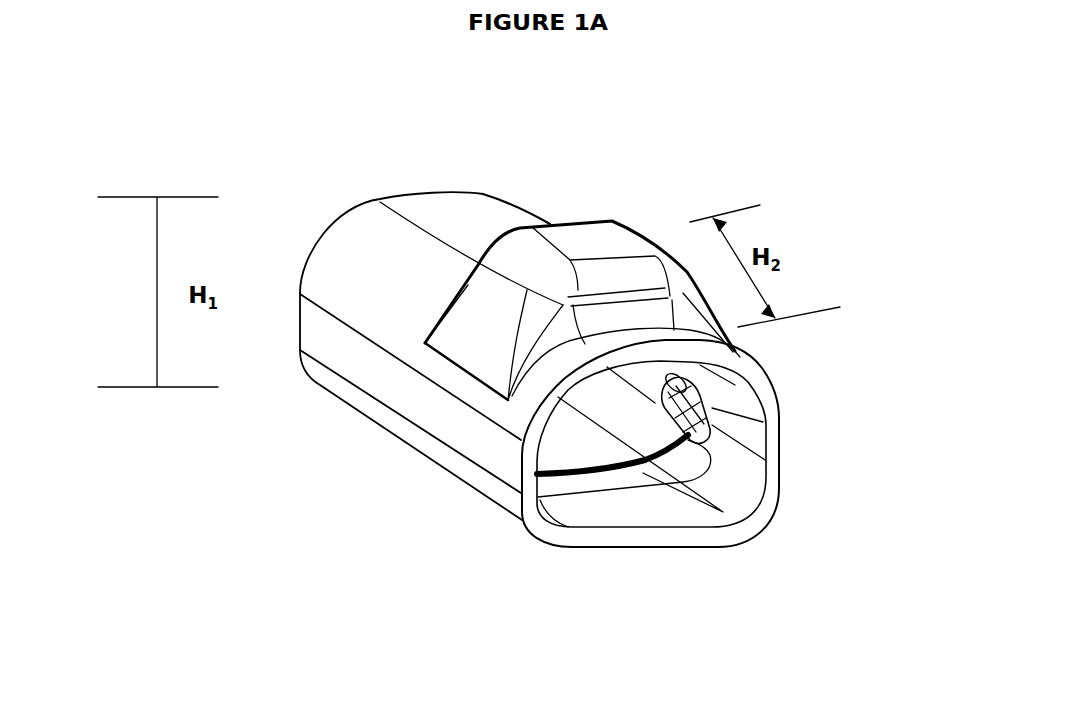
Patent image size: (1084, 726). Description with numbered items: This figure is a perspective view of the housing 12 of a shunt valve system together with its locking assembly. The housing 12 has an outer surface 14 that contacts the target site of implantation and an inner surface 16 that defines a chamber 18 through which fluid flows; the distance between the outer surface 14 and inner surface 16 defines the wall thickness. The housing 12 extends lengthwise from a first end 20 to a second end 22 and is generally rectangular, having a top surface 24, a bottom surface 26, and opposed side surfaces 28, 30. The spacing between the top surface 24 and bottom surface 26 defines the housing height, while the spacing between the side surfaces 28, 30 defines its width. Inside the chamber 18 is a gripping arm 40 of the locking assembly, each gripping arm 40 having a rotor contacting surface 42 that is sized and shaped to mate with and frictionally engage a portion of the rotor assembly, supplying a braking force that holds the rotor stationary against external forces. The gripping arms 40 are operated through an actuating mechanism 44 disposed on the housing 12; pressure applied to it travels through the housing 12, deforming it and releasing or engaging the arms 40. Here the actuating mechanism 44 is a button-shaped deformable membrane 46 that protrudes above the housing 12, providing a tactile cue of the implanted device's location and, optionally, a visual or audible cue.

The housing 12 is at (296, 231).
The outer surface 14 is at (560, 547).
The inner surface 16 is at (677, 507).
The chamber 18 is at (620, 407).
The first end 20 is at (418, 178).
The second end 22 is at (790, 510).
The top surface 24 is at (458, 227).
The bottom surface 26 is at (597, 549).
The side surface 28 is at (418, 407).
The side surface 30 is at (781, 428).
The gripping arm 40 is at (707, 405).
The rotor contacting surface 42 is at (655, 418).
The actuating mechanism 44 is at (578, 192).
The deformable membrane 46 is at (598, 247).